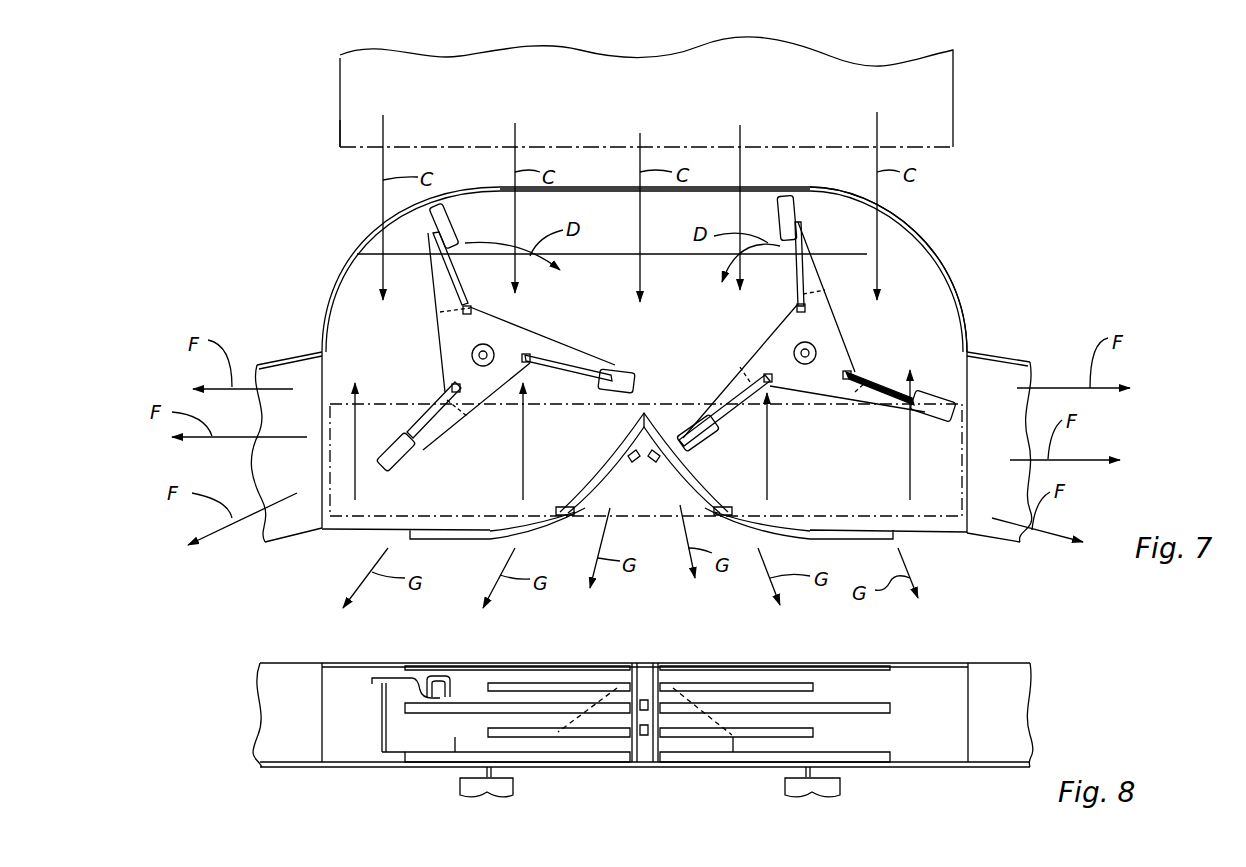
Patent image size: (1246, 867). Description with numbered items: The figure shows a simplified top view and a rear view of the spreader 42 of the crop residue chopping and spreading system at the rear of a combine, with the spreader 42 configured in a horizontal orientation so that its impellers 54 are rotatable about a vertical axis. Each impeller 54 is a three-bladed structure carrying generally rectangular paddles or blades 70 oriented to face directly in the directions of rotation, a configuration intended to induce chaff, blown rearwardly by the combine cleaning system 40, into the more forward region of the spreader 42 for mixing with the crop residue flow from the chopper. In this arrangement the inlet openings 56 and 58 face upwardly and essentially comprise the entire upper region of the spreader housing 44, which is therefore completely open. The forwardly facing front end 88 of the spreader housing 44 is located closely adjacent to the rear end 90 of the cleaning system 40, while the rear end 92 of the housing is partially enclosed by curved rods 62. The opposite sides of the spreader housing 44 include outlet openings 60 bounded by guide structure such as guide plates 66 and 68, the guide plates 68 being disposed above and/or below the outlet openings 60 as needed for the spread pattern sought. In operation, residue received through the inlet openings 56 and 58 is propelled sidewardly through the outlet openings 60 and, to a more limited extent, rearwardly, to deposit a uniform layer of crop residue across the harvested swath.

In FIG. 7, the cleaning system 40 is at (955, 100).
In FIG. 7, the spreader 42 is at (960, 303).
In FIG. 8, the spreader 42 is at (975, 662).
In FIG. 7, the spreader housing 44 is at (967, 342).
In FIG. 8, the spreader housing 44 is at (342, 662).
In FIG. 7, the impellers 54 is at (541, 358).
In FIG. 7, the inlet opening 56 is at (908, 235).
In FIG. 7, the inlet opening 58 is at (878, 485).
In FIG. 8, the outlet openings 60 is at (285, 703).
In FIG. 8, the curved rods 62 is at (500, 688).
In FIG. 7, the guide plates 66 is at (285, 355).
In FIG. 8, the guide plates 66 is at (262, 755).
In FIG. 7, the guide plates 68 is at (263, 537).
In FIG. 8, the guide plates 68 is at (283, 770).
In FIG. 7, the paddles or blades 70 is at (458, 283).
In FIG. 7, the front end 88 is at (598, 188).
In FIG. 7, the rear end 90 is at (358, 148).
In FIG. 7, the rear end 92 is at (950, 533).